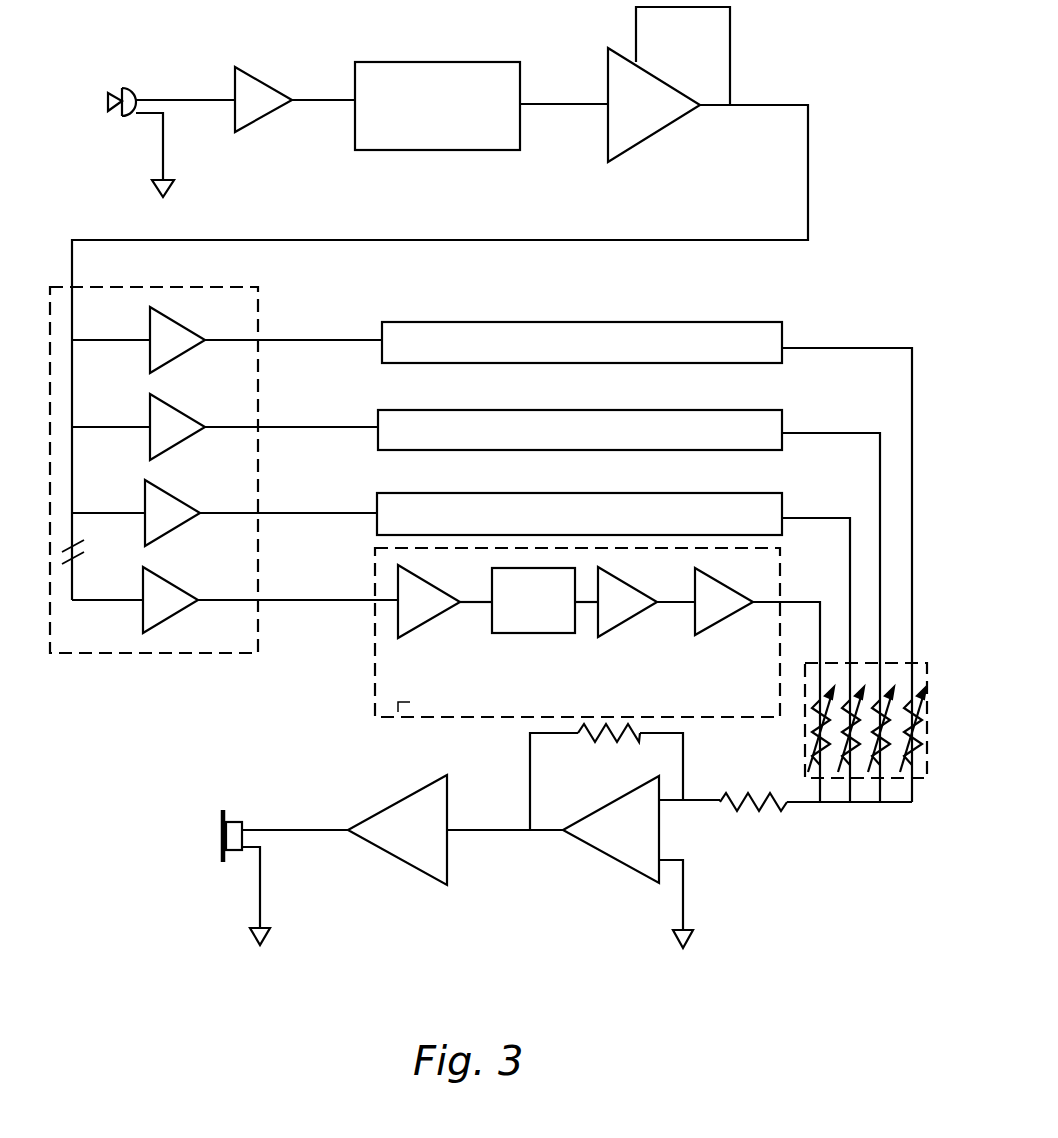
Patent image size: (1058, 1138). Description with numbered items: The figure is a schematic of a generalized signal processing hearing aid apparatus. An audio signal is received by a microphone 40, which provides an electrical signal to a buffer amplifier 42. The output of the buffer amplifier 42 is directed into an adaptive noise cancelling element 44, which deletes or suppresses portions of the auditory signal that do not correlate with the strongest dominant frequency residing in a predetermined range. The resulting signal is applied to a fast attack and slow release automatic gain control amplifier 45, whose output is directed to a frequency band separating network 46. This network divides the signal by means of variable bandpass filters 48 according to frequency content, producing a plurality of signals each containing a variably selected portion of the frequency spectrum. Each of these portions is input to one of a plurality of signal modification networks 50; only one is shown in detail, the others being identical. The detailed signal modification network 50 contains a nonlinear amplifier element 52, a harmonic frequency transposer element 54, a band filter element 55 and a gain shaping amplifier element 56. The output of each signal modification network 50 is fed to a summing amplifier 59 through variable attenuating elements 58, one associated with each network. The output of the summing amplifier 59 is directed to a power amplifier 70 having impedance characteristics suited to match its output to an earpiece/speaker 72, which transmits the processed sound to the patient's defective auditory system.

The microphone 40 is at (171, 127).
The buffer amplifier 42 is at (295, 99).
The adaptive noise cancelling element 44 is at (481, 106).
The automatic gain control amplifier 45 is at (440, 303).
The frequency band separating network 46 is at (149, 506).
The variable bandpass filter 48 is at (235, 470).
The signal modification network 50 is at (643, 562).
The nonlinear amplifier element 52 is at (445, 629).
The harmonic frequency transposer element 54 is at (545, 633).
The band filter element 55 is at (646, 620).
The gain shaping amplifier element 56 is at (729, 621).
The variable attenuating elements 58 is at (810, 760).
The summing amplifier 59 is at (658, 836).
The power amplifier 70 is at (439, 830).
The earpiece/speaker 72 is at (285, 860).